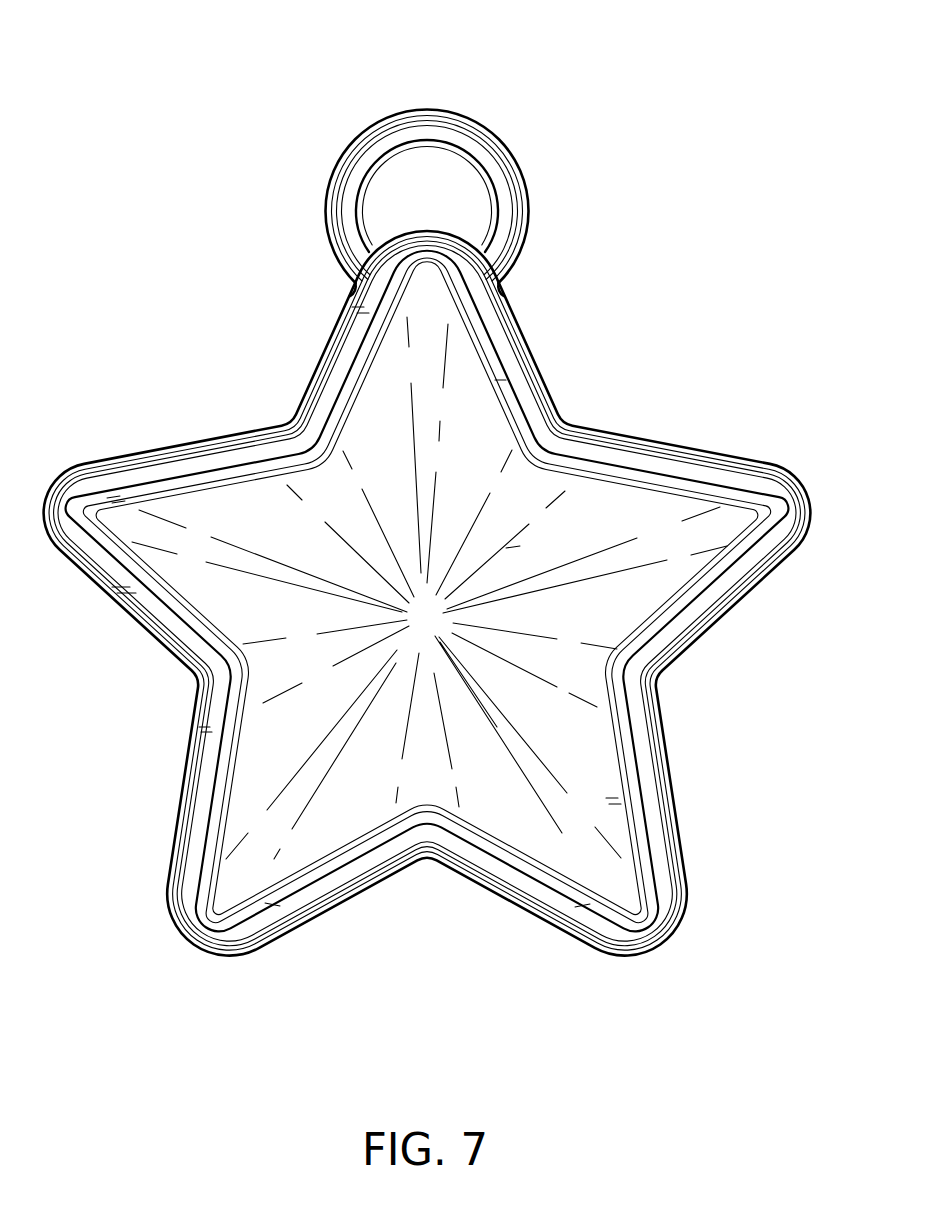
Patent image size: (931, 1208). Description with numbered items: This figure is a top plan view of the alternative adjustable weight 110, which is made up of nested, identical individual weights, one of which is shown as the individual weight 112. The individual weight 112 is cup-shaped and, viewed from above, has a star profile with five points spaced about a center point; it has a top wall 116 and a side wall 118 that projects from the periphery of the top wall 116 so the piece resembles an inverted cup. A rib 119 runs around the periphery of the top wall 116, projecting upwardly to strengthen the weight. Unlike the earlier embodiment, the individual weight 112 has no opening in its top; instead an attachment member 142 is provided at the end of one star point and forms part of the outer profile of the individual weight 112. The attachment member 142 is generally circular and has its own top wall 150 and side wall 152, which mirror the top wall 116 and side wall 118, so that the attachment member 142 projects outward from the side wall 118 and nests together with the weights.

The adjustable weight 110 is at (705, 171).
The individual weight 112 is at (645, 438).
The top wall 116 is at (593, 787).
The side wall 118 is at (695, 655).
The rib 119 is at (215, 745).
The attachment member 142 is at (432, 105).
The top wall 150 is at (352, 211).
The side wall 152 is at (531, 210).